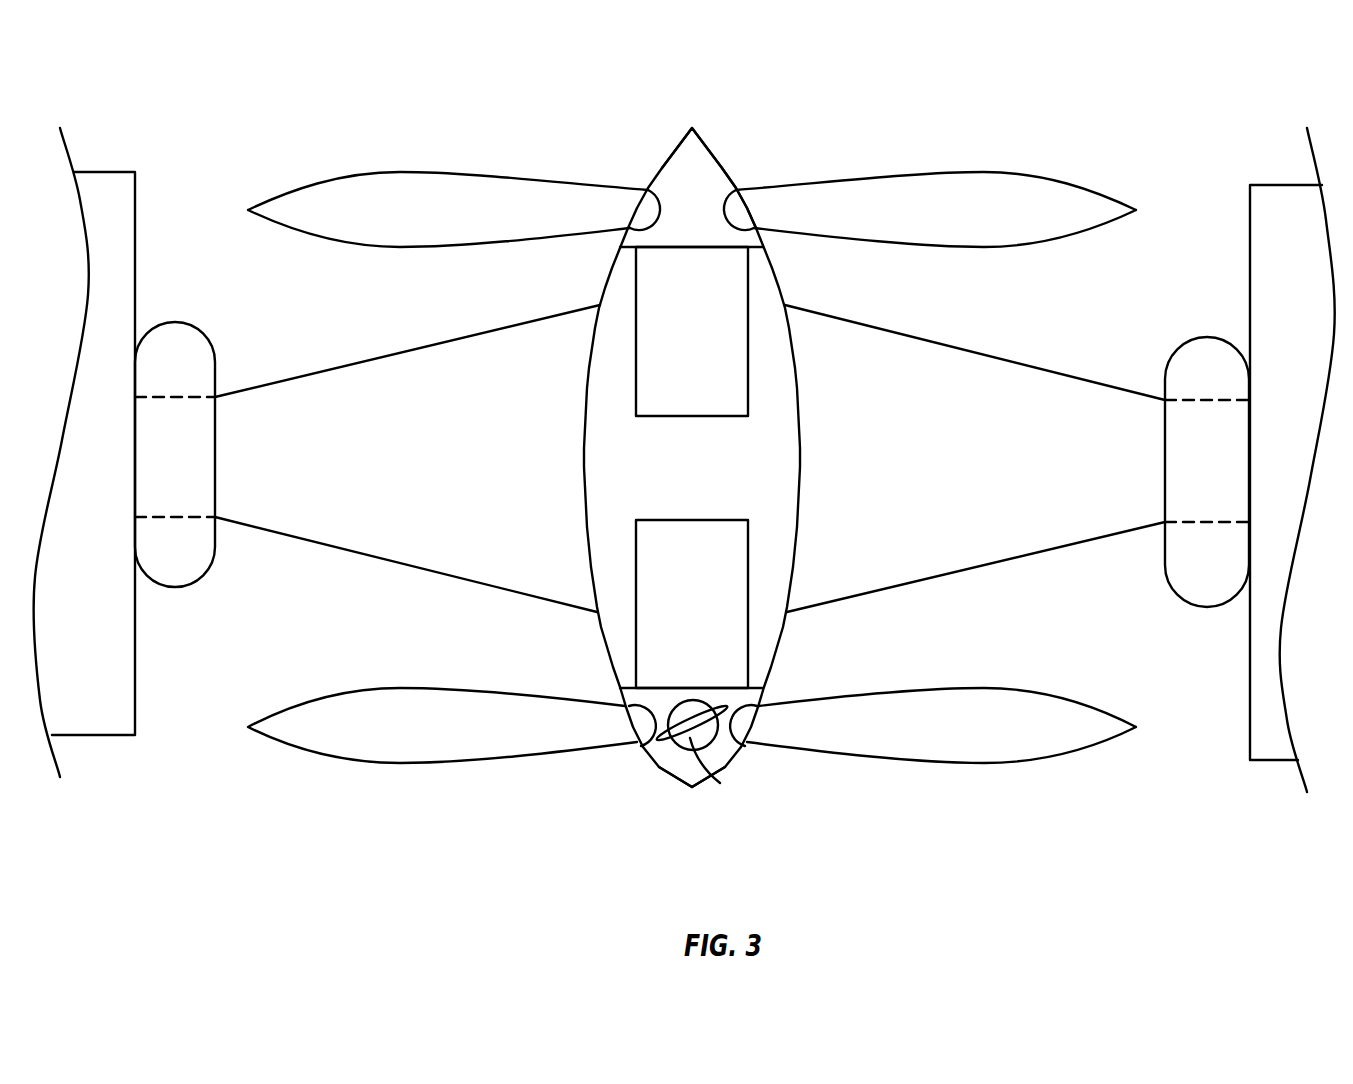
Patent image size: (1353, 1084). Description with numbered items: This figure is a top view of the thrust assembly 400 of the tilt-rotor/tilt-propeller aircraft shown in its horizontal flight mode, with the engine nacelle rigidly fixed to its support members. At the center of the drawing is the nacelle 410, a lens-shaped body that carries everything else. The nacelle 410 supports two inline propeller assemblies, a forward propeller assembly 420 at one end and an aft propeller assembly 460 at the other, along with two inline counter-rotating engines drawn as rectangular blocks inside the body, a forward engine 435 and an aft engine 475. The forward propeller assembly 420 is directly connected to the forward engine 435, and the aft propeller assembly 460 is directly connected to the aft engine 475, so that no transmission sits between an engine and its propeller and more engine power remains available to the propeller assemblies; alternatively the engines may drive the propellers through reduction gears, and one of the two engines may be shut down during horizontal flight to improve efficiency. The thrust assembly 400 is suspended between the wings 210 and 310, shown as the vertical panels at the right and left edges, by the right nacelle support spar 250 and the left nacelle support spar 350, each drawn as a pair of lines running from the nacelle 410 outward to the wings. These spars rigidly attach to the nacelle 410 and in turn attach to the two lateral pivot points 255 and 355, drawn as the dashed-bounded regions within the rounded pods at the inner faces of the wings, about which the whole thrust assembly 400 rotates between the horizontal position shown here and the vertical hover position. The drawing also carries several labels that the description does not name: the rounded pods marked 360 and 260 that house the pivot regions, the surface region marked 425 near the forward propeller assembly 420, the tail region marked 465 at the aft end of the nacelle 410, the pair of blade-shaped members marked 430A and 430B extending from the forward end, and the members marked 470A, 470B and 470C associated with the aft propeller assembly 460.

The thrust assembly 400 is at (182, 78).
The wing 310 is at (108, 172).
The wing 210 is at (1272, 185).
The first docking pod 360 is at (216, 437).
The lateral pivot point 355 is at (198, 462).
The second docking pod 260 is at (1169, 453).
The lateral pivot point 255 is at (1180, 470).
The left nacelle support spar 350 is at (472, 333).
The right nacelle support spar 250 is at (914, 334).
The nacelle 410 is at (777, 657).
The forward propeller assembly 420 is at (692, 127).
The upper fuselage surface 425 is at (735, 172).
The forward engine 435 is at (685, 417).
The aft engine 475 is at (685, 520).
The aft propeller assembly 460 is at (670, 757).
The tail 465 is at (693, 788).
The tail rotor blade 470C is at (718, 783).
The front rotor blade 430A is at (999, 172).
The front rotor blade 430B is at (383, 172).
The rear rotor blade 470A is at (373, 688).
The rear rotor blade 470B is at (996, 688).